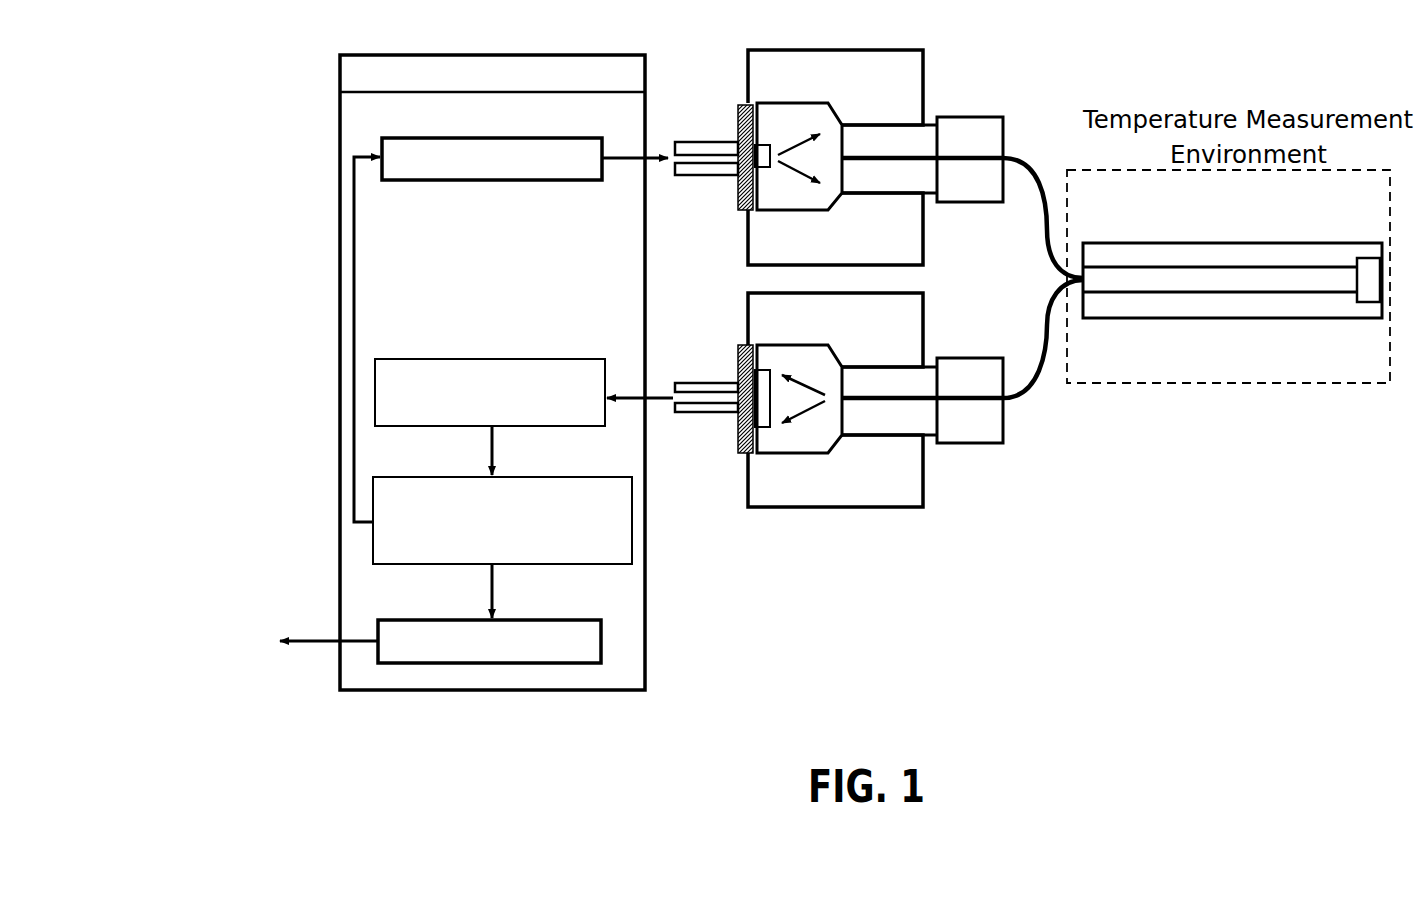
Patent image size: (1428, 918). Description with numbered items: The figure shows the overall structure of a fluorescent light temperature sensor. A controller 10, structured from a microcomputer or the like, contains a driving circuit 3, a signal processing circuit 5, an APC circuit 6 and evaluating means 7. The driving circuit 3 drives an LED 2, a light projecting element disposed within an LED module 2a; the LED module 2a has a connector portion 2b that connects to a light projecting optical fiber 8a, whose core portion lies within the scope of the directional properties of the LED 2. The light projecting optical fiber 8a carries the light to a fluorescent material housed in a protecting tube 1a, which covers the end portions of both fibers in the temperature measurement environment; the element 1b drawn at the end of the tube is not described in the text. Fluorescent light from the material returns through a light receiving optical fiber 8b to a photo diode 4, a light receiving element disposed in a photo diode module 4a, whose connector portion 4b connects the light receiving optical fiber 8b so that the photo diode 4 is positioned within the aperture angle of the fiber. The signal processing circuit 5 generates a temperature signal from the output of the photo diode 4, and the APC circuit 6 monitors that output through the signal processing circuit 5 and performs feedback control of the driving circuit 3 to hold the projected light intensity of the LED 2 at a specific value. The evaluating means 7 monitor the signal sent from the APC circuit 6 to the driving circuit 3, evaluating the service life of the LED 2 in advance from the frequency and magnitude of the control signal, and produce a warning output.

The controller 10 is at (565, 55).
The driving circuit 3 is at (576, 138).
The signal processing circuit 5 is at (512, 359).
The APC circuit 6 is at (572, 477).
The evaluating means 7 is at (572, 620).
The LED 2 is at (763, 112).
The LED module 2a is at (800, 103).
The connector portion 2b is at (920, 130).
The photo diode 4 is at (762, 420).
The photo diode module 4a is at (800, 453).
The connector portion 4b is at (920, 427).
The light projecting optical fiber 8a is at (1040, 182).
The light receiving optical fiber 8b is at (1038, 380).
The protecting tube 1a is at (1337, 243).
The temperature sensing element 1b is at (1382, 279).